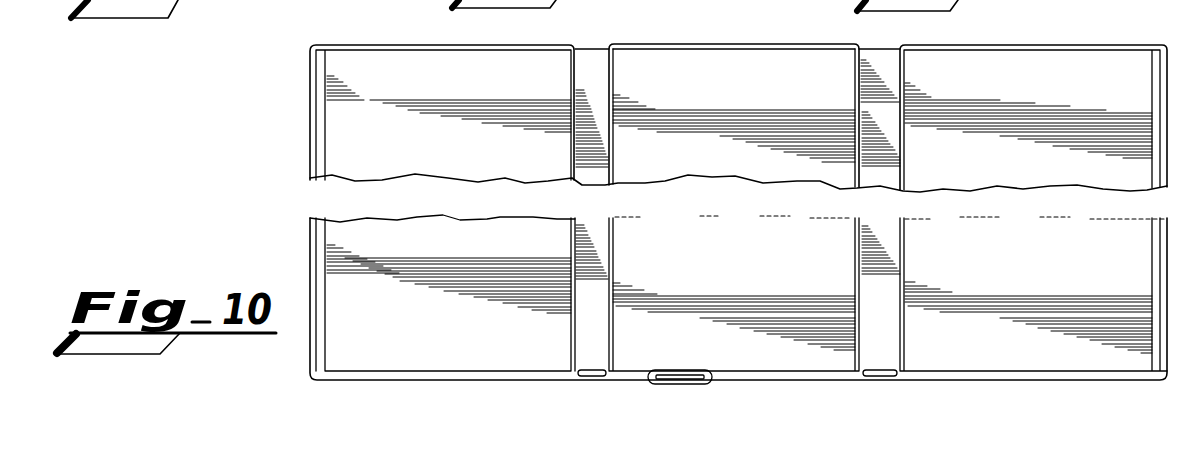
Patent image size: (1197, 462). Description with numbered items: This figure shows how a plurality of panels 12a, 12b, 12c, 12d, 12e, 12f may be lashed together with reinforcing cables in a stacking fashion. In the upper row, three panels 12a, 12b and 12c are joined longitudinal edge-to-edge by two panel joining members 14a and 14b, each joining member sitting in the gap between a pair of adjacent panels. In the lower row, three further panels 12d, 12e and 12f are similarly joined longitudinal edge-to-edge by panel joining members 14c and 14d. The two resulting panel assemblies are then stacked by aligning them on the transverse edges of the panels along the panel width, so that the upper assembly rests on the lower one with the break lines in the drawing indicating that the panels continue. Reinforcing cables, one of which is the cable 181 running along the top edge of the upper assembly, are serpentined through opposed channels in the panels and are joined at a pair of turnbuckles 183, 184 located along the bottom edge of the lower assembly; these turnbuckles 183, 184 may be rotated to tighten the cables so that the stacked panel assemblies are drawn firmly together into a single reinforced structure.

The panel 12a is at (346, 78).
The panel 12b is at (734, 94).
The panel 12c is at (1095, 64).
The panel 12d is at (1041, 358).
The panel 12e is at (732, 314).
The panel 12f is at (330, 343).
The panel joining member 14a is at (600, 42).
The panel joining member 14b is at (884, 42).
The panel joining member 14c is at (567, 382).
The panel joining member 14d is at (900, 386).
The cable 181 is at (734, 25).
The turnbuckle 183 is at (658, 390).
The turnbuckle 184 is at (698, 386).